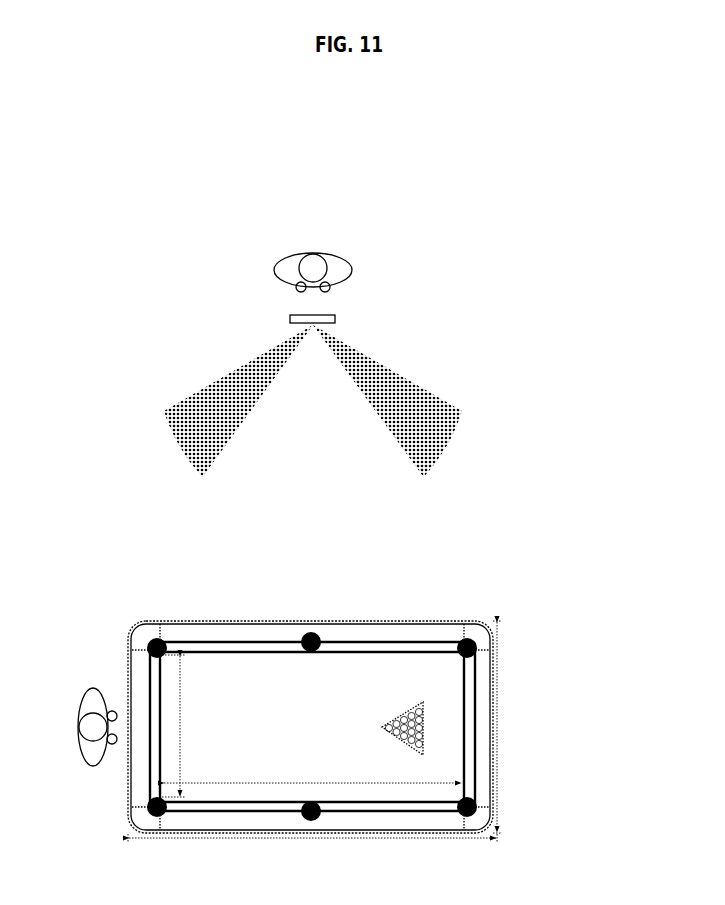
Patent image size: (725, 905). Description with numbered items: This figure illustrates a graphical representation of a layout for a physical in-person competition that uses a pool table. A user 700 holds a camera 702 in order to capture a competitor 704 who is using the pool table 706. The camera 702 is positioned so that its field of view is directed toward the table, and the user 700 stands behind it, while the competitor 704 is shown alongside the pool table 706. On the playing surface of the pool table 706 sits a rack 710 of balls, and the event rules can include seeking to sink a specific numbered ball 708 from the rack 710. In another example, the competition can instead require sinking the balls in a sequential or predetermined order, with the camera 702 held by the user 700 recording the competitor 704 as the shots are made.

The user 700 is at (312, 240).
The camera 702 is at (275, 322).
The competitor 704 is at (68, 727).
The pool table 706 is at (312, 610).
The numbered ball 708 is at (378, 728).
The rack 710 is at (393, 704).